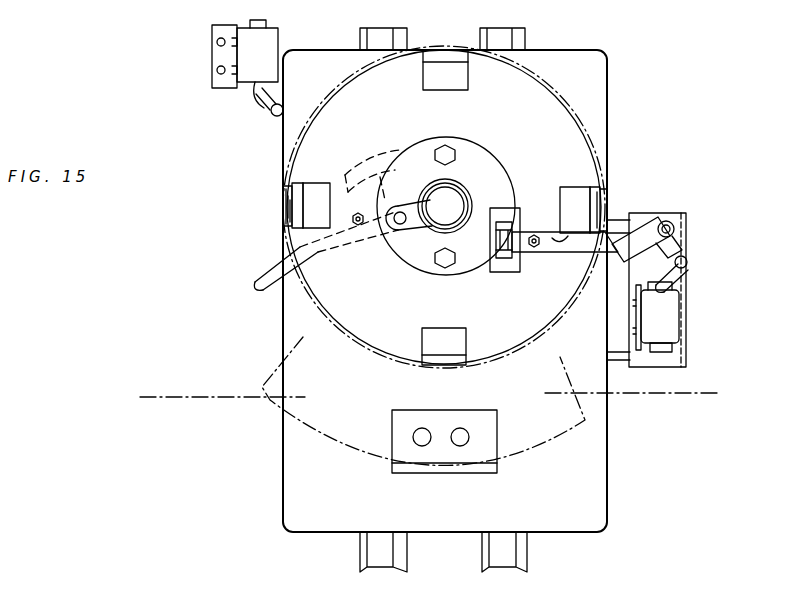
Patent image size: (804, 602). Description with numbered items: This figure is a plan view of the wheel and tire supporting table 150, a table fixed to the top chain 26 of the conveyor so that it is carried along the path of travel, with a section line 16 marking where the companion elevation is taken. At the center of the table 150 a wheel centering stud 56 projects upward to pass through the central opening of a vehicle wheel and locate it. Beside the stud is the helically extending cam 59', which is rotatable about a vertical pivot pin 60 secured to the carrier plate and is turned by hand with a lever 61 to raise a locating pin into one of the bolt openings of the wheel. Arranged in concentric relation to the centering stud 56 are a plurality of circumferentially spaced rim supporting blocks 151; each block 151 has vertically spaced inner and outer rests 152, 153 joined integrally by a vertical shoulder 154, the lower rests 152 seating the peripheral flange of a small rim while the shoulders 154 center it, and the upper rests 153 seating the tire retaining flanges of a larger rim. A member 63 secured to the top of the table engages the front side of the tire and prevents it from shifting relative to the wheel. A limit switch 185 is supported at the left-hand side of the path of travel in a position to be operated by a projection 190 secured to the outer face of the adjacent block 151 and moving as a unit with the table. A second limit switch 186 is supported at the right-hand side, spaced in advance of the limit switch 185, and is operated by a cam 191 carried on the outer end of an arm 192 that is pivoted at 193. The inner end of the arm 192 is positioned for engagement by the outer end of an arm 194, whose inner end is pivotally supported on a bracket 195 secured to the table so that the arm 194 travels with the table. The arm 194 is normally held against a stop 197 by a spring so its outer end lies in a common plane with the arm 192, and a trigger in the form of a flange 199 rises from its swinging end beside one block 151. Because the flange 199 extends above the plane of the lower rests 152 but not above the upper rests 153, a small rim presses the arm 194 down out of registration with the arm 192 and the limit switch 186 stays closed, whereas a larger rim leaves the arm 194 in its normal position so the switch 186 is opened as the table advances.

The table 150 is at (292, 444).
The top chain 26 is at (532, 555).
The centering stud 56 is at (456, 201).
The pivot pin 60 is at (357, 227).
The helically extending cam 59' is at (372, 169).
The lever 61 is at (258, 280).
The rim supporting blocks 151 is at (457, 98).
The inner rests 152 is at (322, 198).
The vertical shoulder 154 is at (290, 185).
The projection 190 is at (290, 207).
The outer rests 153 is at (298, 204).
The bracket 195 is at (508, 268).
The arm 194 is at (582, 247).
The stop 197 is at (534, 248).
The flange 199 is at (560, 238).
The arm 192 is at (648, 216).
The pivot 193 is at (674, 229).
The cam 191 is at (672, 251).
The limit switch 186 is at (672, 332).
The limit switch 185 is at (246, 53).
The member 63 is at (468, 473).
The section line 16- 16 is at (155, 408).